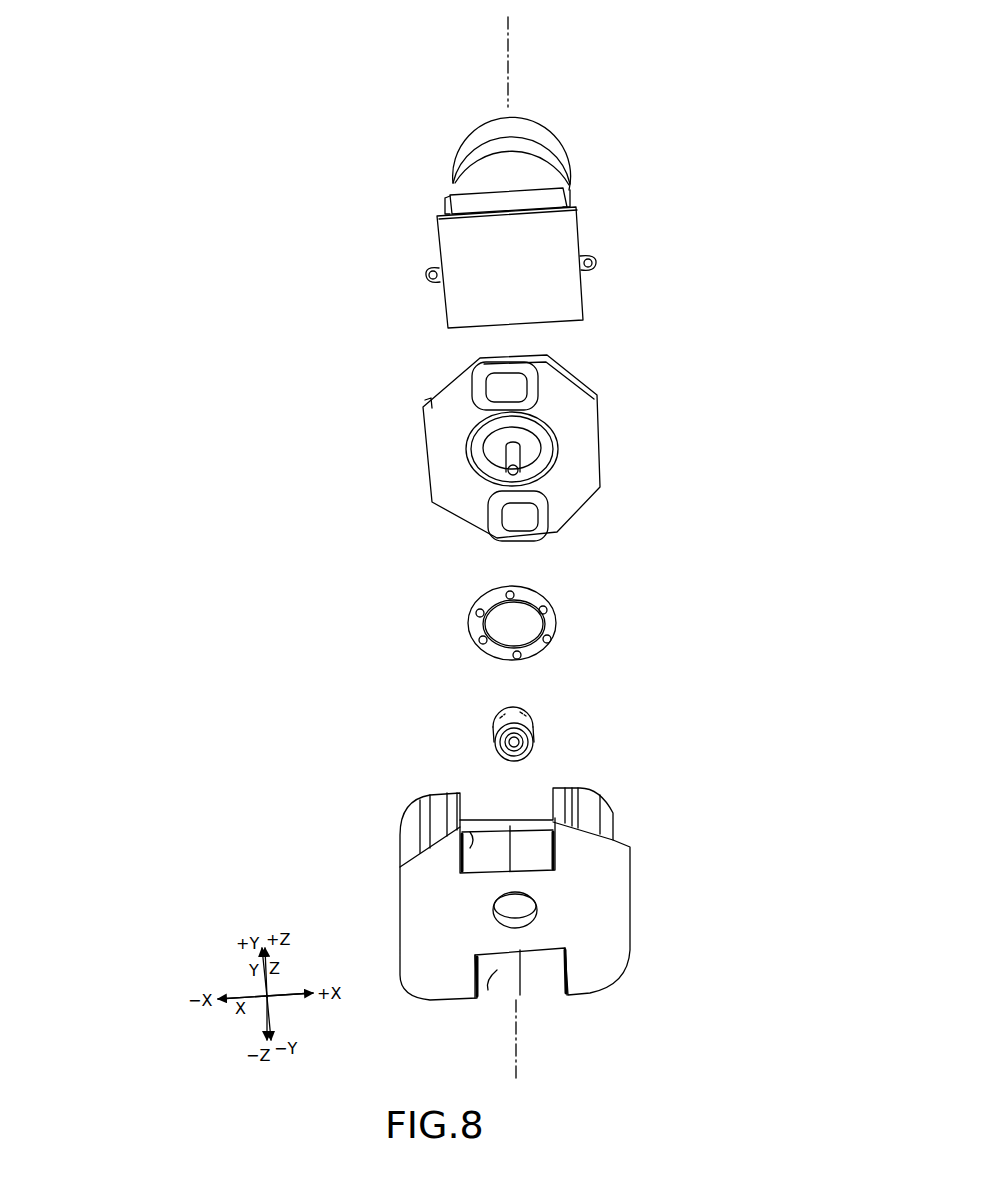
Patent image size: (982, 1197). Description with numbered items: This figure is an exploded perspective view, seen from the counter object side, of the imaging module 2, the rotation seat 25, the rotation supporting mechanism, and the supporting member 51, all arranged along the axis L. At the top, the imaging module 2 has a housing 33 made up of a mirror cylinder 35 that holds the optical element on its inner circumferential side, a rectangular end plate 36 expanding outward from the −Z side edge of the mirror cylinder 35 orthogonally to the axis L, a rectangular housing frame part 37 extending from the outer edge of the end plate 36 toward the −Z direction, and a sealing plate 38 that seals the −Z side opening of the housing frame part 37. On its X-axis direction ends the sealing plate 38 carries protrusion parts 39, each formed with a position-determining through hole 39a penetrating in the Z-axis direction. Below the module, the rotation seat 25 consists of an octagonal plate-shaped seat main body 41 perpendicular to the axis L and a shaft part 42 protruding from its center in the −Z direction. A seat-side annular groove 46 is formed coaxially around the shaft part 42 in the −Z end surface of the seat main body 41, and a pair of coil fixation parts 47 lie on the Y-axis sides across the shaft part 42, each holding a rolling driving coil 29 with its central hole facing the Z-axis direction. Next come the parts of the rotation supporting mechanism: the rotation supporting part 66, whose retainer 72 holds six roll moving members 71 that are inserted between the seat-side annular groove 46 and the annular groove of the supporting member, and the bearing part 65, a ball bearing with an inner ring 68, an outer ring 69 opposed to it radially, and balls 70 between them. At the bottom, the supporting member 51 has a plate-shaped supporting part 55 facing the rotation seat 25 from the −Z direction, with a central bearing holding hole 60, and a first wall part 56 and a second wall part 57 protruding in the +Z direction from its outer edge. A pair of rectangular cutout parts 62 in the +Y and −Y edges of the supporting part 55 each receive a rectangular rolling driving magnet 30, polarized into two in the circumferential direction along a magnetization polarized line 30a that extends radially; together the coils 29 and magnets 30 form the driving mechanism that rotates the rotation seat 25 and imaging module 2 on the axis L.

The axis L is at (508, 48).
The imaging module 2 is at (596, 172).
The housing 33 is at (356, 150).
The mirror cylinder 35 is at (465, 180).
The end plate 36 is at (480, 190).
The housing frame part 37 is at (458, 208).
The sealing plate 38 is at (448, 233).
The protrusion parts 39 is at (426, 274).
The position-determining through hole 39a is at (432, 281).
The rotation seat 25 is at (647, 360).
The seat main body 41 is at (598, 386).
The shaft part 42 is at (518, 468).
The seat-side annular groove 46 is at (488, 450).
The coil fixation parts 47 is at (498, 378).
The rolling driving coils 29 is at (480, 396).
The rotation supporting part 66 is at (462, 603).
The roll moving members 71 is at (551, 640).
The retainer 72 is at (472, 637).
The bearing part 65 is at (468, 717).
The inner ring 68 is at (518, 748).
The outer ring 69 is at (535, 725).
The balls 70 is at (534, 741).
The supporting member 51 is at (365, 812).
The supporting part 55 is at (438, 950).
The first wall part 56 is at (398, 847).
The second wall part 57 is at (593, 812).
The bearing holding hole 60 is at (528, 917).
The cutout parts 62 is at (474, 837).
The rolling driving magnets 30 is at (525, 837).
The magnetization polarized line 30a is at (505, 847).